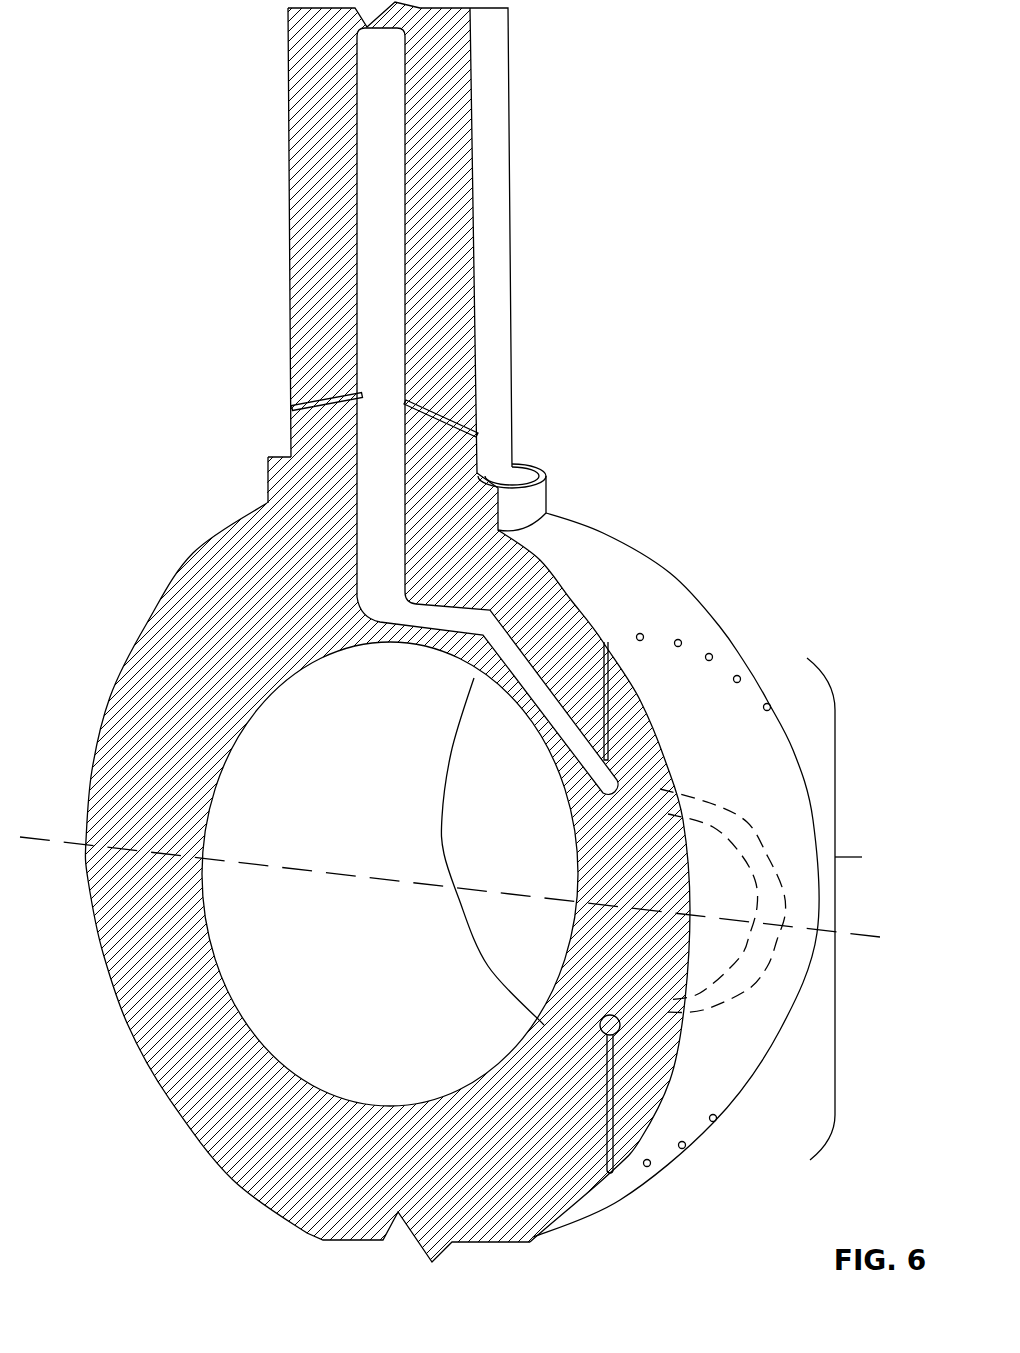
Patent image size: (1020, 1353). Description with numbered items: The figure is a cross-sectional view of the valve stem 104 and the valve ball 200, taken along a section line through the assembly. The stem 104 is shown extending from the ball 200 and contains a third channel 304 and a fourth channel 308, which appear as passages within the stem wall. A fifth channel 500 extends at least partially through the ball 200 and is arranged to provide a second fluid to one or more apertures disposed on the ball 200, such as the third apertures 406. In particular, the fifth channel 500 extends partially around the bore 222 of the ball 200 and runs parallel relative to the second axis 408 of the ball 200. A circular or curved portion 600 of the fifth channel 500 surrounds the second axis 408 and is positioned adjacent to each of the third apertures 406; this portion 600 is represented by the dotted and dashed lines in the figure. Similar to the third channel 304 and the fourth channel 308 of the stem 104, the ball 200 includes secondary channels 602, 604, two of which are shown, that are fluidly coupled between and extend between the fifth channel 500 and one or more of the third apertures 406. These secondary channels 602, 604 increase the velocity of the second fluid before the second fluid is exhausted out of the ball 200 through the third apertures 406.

The valve stem 104 is at (288, 140).
The valve ball 200 is at (193, 555).
The bore 222 is at (252, 747).
The third channel 304 is at (330, 393).
The fourth channel 308 is at (443, 402).
The third apertures 406 is at (862, 857).
The second axis 408 is at (309, 869).
The fifth channel 500 is at (382, 599).
The circular or curved portion 600 is at (693, 790).
The secondary channel 602 is at (613, 717).
The secondary channel 604 is at (603, 1142).